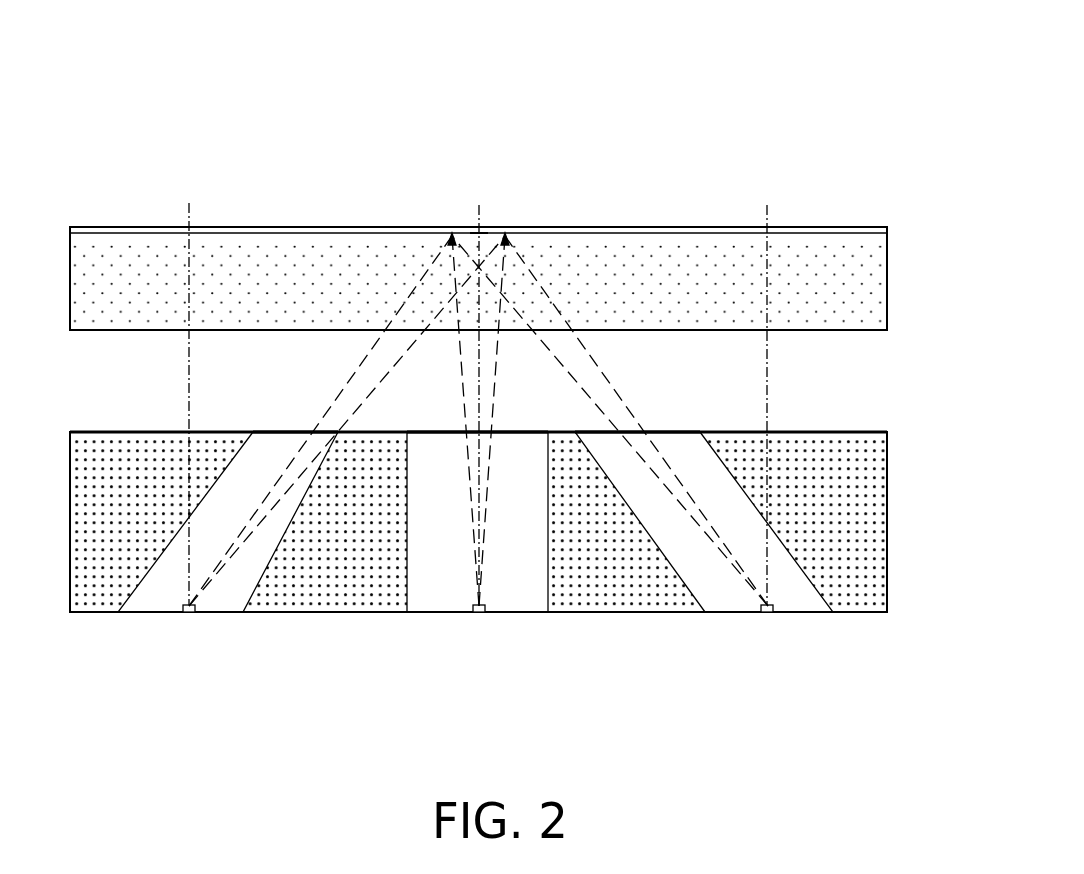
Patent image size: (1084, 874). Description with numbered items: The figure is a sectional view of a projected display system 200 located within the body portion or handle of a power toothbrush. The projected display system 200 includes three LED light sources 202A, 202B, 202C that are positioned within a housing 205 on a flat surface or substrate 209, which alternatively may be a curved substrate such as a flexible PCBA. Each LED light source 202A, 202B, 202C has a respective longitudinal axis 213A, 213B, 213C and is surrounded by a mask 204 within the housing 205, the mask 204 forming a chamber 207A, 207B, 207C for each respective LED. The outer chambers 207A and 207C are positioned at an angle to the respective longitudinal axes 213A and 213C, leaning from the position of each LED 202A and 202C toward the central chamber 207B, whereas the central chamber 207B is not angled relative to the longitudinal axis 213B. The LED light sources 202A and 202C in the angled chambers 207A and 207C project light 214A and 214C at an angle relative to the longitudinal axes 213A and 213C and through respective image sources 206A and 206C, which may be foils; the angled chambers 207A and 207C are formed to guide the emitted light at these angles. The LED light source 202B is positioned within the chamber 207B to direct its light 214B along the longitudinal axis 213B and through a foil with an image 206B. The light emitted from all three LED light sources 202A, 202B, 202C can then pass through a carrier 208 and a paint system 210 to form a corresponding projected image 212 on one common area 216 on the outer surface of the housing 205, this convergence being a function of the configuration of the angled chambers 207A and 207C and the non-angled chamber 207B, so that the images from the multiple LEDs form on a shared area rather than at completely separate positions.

The projected display system 200 is at (815, 114).
The LED light source 202A is at (190, 613).
The LED light source 202B is at (479, 613).
The LED light source 202C is at (768, 613).
The mask 204 is at (290, 603).
The housing 205 is at (892, 334).
The image source 206A is at (282, 430).
The foil with an image 206B is at (440, 430).
The image source 206C is at (583, 430).
The angled chamber 207A is at (155, 600).
The chamber 207B is at (443, 600).
The angled chamber 207C is at (722, 600).
The carrier 208 is at (288, 255).
The substrate 209 is at (855, 619).
The paint system 210 is at (333, 226).
The projected image 212 is at (488, 230).
The longitudinal axis 213A is at (188, 216).
The longitudinal axis 213B is at (477, 217).
The longitudinal axis 213C is at (766, 217).
The light 214A is at (340, 395).
The light 214B is at (465, 373).
The light 214C is at (612, 396).
The common area 216 is at (483, 196).